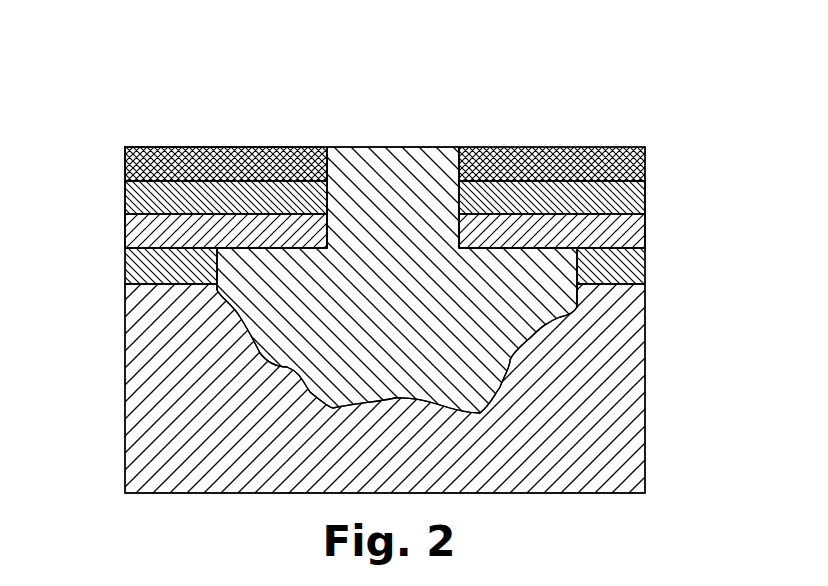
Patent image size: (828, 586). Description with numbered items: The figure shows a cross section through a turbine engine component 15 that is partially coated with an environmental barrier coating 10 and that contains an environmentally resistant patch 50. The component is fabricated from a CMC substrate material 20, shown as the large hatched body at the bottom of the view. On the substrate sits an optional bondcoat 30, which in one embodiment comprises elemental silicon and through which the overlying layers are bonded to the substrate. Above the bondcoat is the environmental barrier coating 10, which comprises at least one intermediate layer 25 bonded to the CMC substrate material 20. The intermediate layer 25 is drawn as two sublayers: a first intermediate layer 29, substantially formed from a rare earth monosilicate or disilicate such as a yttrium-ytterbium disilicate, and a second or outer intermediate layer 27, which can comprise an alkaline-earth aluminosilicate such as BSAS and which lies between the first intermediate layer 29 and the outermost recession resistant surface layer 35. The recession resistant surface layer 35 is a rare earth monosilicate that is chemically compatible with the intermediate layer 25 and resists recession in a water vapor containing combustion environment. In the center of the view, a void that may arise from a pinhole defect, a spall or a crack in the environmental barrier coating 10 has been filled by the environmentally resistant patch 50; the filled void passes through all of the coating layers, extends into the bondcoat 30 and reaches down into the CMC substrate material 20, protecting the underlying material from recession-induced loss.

The turbine engine component 15 is at (120, 105).
The environmental barrier coating 10 is at (110, 147).
The CMC substrate material 20 is at (647, 370).
The intermediate layer 25 is at (686, 181).
The second intermediate layer 27 is at (647, 182).
The first intermediate layer 29 is at (647, 240).
The bondcoat 30 is at (647, 284).
The recession resistant surface layer 35 is at (645, 160).
The environmentally resistant patch 50 is at (405, 172).